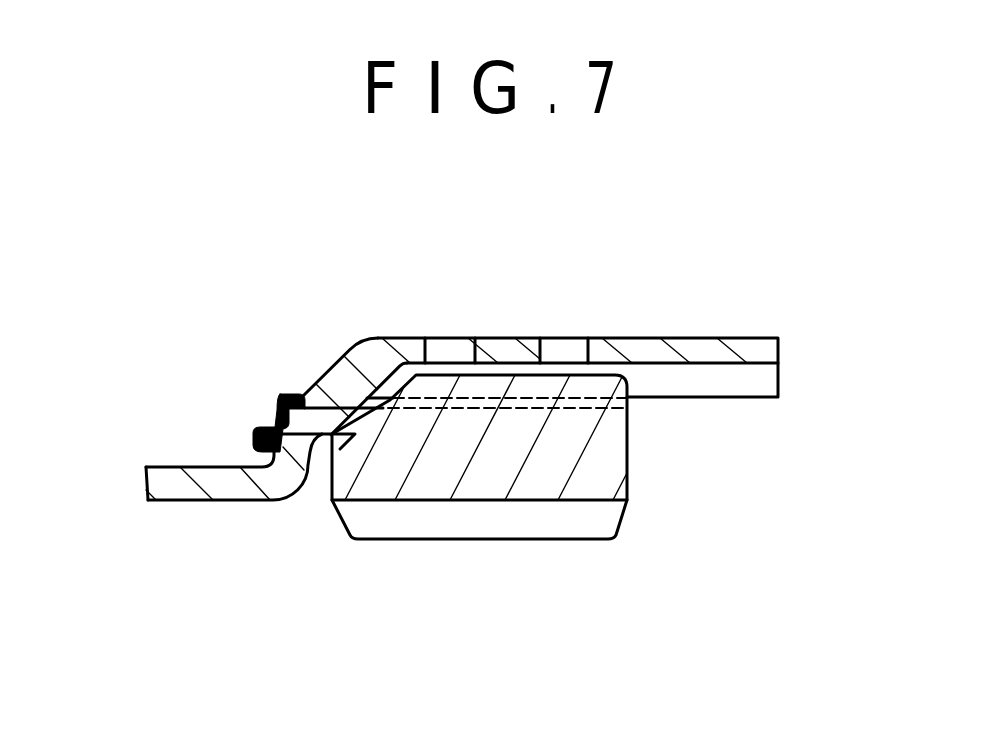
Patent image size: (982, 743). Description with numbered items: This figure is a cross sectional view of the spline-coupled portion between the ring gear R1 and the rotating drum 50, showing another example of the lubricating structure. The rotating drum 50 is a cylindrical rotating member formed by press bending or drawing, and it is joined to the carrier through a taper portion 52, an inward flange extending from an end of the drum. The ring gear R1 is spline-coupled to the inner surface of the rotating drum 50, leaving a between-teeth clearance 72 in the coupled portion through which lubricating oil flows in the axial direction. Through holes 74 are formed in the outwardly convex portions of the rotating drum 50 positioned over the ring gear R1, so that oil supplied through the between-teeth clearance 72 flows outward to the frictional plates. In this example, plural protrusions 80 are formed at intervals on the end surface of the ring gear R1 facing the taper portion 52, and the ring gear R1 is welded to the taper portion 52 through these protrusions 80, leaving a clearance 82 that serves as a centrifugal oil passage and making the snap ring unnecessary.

The rotating drum 50 is at (747, 347).
The taper portion 52 is at (349, 388).
The between-teeth clearance 72 is at (517, 373).
The through hole 74 is at (473, 351).
The protrusion 80 is at (322, 417).
The clearance 82 is at (330, 450).
The ring gear R1 is at (498, 476).